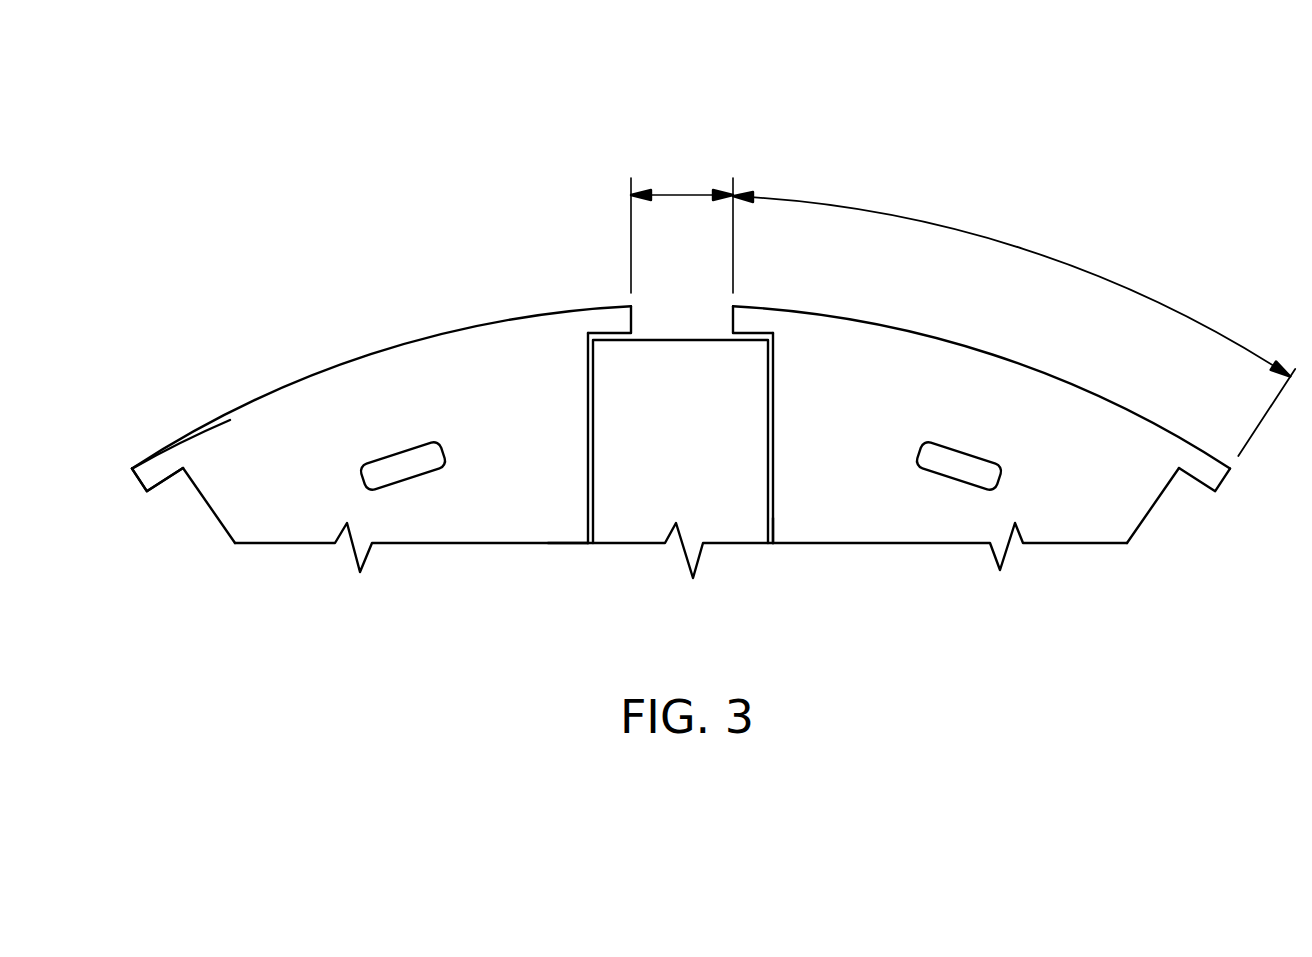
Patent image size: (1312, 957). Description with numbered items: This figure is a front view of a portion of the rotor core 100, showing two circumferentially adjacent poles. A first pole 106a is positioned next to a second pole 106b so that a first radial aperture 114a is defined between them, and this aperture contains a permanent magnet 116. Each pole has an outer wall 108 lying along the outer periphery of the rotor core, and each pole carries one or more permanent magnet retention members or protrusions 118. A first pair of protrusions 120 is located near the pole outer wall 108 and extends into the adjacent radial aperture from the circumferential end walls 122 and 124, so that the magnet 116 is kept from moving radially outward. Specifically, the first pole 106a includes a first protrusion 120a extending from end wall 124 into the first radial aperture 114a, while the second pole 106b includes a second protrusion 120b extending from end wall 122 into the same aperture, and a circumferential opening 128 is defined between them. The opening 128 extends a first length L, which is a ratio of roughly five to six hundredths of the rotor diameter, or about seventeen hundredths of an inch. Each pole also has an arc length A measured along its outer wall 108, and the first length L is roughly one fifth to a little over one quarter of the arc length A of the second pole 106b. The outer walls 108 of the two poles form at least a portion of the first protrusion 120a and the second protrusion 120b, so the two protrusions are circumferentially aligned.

The rotor core 100 is at (195, 185).
The outer wall 108 is at (318, 372).
The protrusion 118 is at (158, 433).
The first pair of protrusions 120 is at (135, 448).
The first protrusion 120a is at (612, 320).
The second protrusion 120b is at (748, 320).
The circumferential opening 128 is at (673, 297).
The first length L is at (675, 192).
The arc length A is at (1020, 252).
The first radial aperture 114a is at (782, 507).
The circumferential end wall 122 is at (220, 523).
The circumferential end wall 124 is at (588, 508).
The first pole 106a is at (437, 528).
The permanent magnet 116 is at (710, 527).
The second pole 106b is at (953, 532).